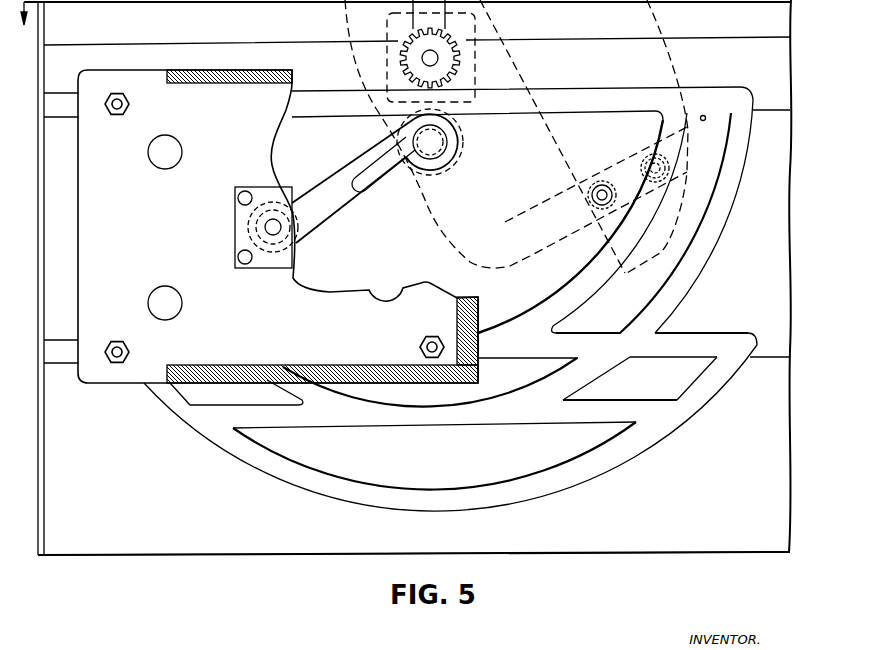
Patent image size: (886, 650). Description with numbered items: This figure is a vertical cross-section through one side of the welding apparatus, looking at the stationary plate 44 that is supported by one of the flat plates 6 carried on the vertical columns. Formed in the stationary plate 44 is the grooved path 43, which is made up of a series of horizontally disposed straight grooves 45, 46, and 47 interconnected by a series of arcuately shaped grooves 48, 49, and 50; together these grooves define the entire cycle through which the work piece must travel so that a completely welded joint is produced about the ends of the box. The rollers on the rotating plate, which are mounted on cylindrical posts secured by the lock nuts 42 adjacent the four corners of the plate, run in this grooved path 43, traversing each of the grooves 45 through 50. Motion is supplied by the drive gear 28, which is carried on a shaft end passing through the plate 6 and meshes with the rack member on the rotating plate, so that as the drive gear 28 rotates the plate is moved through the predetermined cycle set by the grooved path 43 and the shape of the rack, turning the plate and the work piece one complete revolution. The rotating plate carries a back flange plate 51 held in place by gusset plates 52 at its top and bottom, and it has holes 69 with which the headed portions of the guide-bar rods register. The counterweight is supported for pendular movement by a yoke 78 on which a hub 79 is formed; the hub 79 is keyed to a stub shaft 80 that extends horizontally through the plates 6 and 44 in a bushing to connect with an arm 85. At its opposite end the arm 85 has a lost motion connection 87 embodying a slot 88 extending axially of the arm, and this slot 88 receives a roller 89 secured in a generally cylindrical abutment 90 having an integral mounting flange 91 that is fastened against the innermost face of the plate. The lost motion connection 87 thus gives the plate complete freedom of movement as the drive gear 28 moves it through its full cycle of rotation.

The flat plate 6 is at (24, 26).
The drive gear 28 is at (448, 56).
The lock nut 42 is at (440, 340).
The grooved path 43 is at (537, 318).
The stationary plate 44 is at (233, 543).
The straight groove 45 is at (477, 197).
The straight groove 46 is at (690, 338).
The straight groove 47 is at (557, 415).
The arcuately shaped groove 48 is at (672, 123).
The arcuately shaped groove 49 is at (653, 316).
The arcuately shaped groove 50 is at (437, 486).
The back flange plate 51 is at (472, 318).
The gusset plate 52 is at (293, 217).
The hole 69 is at (178, 301).
The yoke 78 is at (456, 246).
The hub 79 is at (462, 130).
The stub shaft 80 is at (450, 150).
The arm 85 is at (353, 181).
The lost motion connection 87 is at (306, 188).
The slot 88 is at (362, 193).
The roller 89 is at (268, 192).
The abutment 90 is at (273, 240).
The mounting flange 91 is at (253, 230).